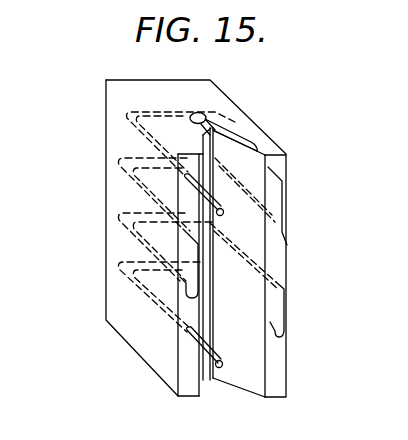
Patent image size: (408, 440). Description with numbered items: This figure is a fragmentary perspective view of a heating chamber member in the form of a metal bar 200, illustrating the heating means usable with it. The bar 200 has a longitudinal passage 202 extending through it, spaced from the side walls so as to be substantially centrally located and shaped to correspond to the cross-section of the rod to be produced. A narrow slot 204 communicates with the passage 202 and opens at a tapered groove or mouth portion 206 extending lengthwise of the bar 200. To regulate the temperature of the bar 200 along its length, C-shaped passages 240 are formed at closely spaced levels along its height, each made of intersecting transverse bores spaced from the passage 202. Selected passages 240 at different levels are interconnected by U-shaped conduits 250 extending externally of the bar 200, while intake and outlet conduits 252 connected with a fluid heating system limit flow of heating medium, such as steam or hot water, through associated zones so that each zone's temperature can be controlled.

The metal bar 200 is at (118, 197).
The longitudinal passage 202 is at (206, 118).
The narrow slot 204 is at (255, 130).
The tapered groove or mouth portion 206 is at (258, 148).
The C-shaped passages 240 is at (137, 130).
The U-shaped conduits 250 is at (198, 259).
The intake and outlet passages or conduits 252 is at (223, 214).